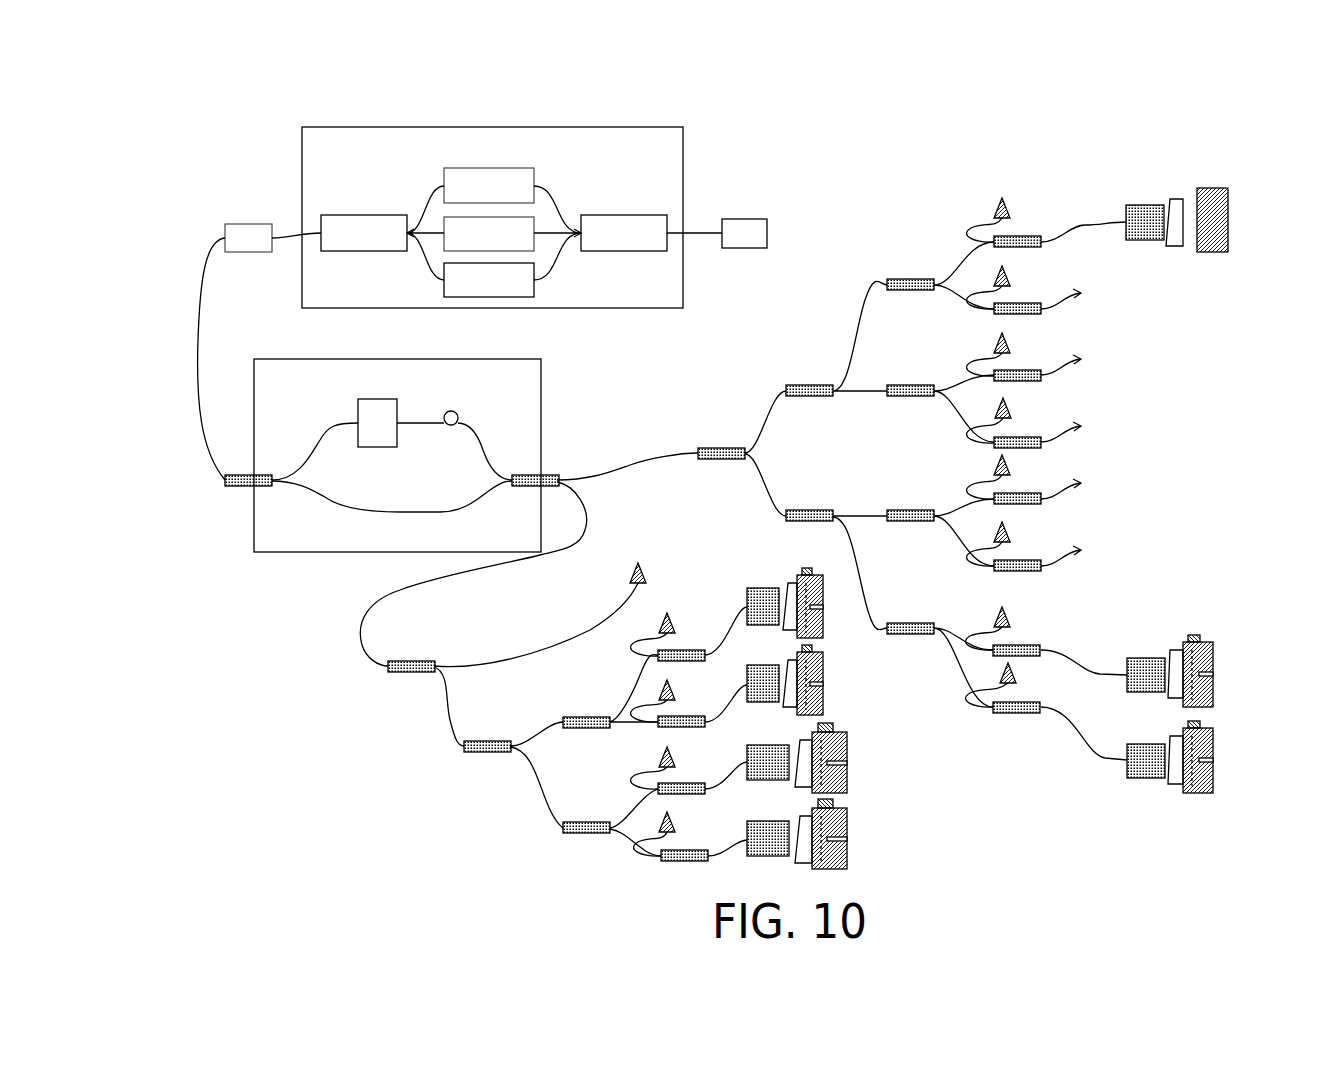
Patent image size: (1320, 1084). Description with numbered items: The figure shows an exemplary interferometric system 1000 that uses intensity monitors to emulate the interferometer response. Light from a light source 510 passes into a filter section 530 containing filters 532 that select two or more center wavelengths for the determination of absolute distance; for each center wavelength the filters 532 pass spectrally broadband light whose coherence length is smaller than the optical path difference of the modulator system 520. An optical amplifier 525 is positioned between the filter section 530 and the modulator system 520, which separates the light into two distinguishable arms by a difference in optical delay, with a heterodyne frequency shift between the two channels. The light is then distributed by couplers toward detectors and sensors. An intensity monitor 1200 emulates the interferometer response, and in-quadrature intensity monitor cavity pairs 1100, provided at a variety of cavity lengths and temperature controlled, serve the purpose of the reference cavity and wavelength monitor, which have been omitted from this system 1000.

The interferometric system 1000 is at (817, 103).
The optical amplifier 525 is at (217, 238).
The filter section 530 is at (512, 180).
The filters 532 is at (502, 168).
The light source 510 is at (720, 217).
The modulator system 520 is at (287, 553).
The intensity monitor 1200 is at (635, 553).
The intensity monitor cavity pairs 1100 is at (850, 837).